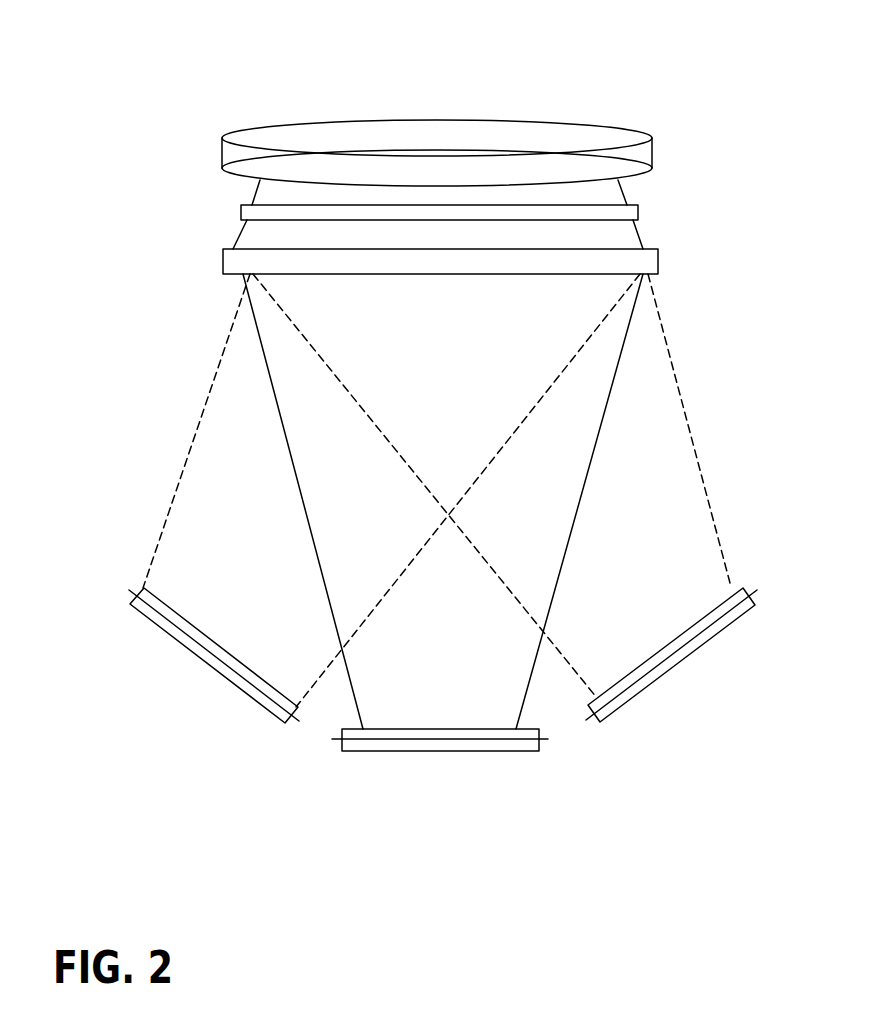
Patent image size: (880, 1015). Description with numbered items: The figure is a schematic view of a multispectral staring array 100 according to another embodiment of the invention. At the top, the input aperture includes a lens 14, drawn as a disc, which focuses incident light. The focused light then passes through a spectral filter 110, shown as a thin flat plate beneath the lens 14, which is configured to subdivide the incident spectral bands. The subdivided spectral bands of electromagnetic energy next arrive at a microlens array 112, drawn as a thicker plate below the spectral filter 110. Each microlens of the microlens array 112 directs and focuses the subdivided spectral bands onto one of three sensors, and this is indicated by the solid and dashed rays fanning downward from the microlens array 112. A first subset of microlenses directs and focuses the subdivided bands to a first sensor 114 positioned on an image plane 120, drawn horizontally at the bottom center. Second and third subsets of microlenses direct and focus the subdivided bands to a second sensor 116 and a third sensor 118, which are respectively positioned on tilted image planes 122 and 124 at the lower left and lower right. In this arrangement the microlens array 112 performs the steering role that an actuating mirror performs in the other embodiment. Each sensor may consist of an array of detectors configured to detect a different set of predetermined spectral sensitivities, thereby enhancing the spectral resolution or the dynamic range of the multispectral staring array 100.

The multispectral staring array 100 is at (693, 42).
The lens 14 is at (548, 135).
The spectral filter 110 is at (632, 212).
The microlens array 112 is at (647, 263).
The first sensor 114 is at (400, 742).
The second sensor 116 is at (228, 673).
The third sensor 118 is at (658, 673).
The image plane 120 is at (338, 739).
The image plane 122 is at (130, 590).
The image plane 124 is at (755, 595).